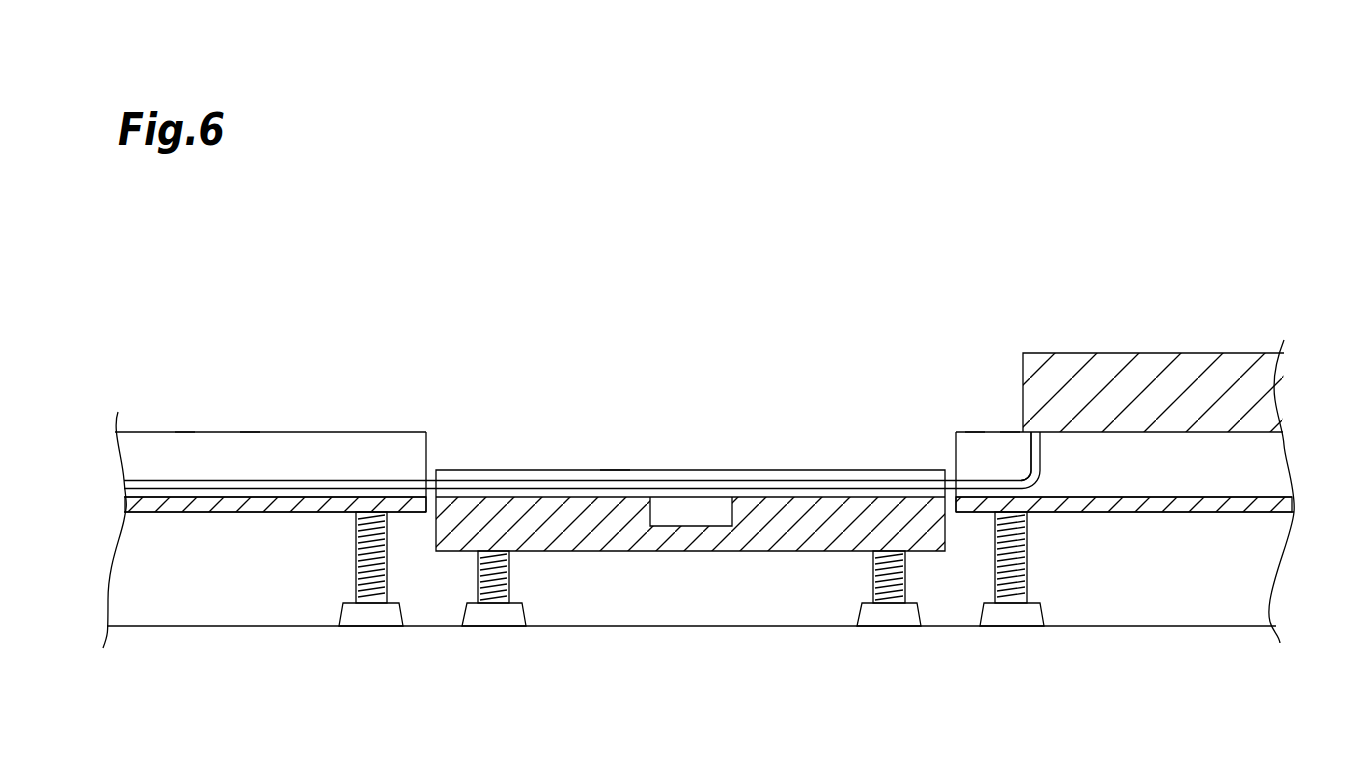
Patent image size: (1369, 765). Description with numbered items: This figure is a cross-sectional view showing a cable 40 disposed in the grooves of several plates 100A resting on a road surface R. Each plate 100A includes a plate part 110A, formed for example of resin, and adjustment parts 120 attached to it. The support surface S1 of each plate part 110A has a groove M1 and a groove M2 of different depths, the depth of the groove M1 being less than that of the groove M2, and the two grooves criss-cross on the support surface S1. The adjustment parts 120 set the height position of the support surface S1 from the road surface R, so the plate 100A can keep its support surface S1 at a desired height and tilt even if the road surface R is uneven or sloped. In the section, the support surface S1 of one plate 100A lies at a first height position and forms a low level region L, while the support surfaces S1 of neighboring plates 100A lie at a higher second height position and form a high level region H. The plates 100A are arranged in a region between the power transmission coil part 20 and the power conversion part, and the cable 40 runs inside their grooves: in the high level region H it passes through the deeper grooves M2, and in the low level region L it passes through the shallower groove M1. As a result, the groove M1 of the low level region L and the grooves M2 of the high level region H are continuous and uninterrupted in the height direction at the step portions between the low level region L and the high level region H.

The plate 100A is at (302, 430).
The plate part 110A is at (172, 500).
The adjustment parts 120 is at (356, 575).
The power transmission coil part 20 is at (1245, 353).
The cable 40 is at (970, 478).
The high level region H is at (188, 432).
The support surface S1 is at (255, 432).
The groove M1 is at (520, 481).
The groove M2 is at (366, 456).
The low level region L is at (808, 470).
The road surface R is at (1240, 626).